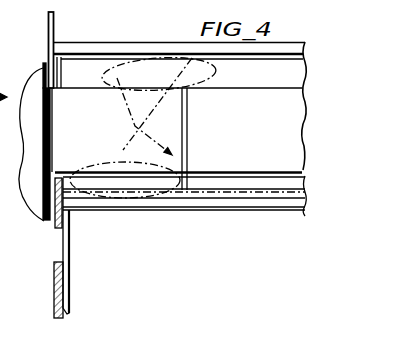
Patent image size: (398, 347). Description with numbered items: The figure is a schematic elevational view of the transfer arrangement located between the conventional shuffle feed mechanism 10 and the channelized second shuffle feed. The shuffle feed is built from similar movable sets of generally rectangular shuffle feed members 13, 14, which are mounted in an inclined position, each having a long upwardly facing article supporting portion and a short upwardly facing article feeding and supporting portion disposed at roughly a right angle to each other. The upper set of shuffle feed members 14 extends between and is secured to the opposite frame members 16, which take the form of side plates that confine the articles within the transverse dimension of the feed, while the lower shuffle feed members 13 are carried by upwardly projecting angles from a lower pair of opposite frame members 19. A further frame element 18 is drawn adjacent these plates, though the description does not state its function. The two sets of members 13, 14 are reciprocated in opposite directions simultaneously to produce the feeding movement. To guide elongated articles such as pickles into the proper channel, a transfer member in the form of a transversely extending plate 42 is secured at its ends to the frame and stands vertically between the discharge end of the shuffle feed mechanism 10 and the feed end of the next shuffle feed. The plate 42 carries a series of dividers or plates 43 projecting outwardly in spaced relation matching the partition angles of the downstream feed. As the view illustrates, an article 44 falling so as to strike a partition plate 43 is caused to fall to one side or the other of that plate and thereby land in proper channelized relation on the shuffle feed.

The shuffle feed mechanism 10 is at (21, 194).
The shuffle feed members 13 is at (207, 207).
The shuffle feed members 14 is at (263, 182).
The frame members 16 is at (57, 227).
The vertical bar 18 is at (67, 252).
The frame members 19 is at (53, 292).
The plate 42 is at (272, 128).
The dividers 43 is at (190, 137).
The article 44 is at (127, 70).